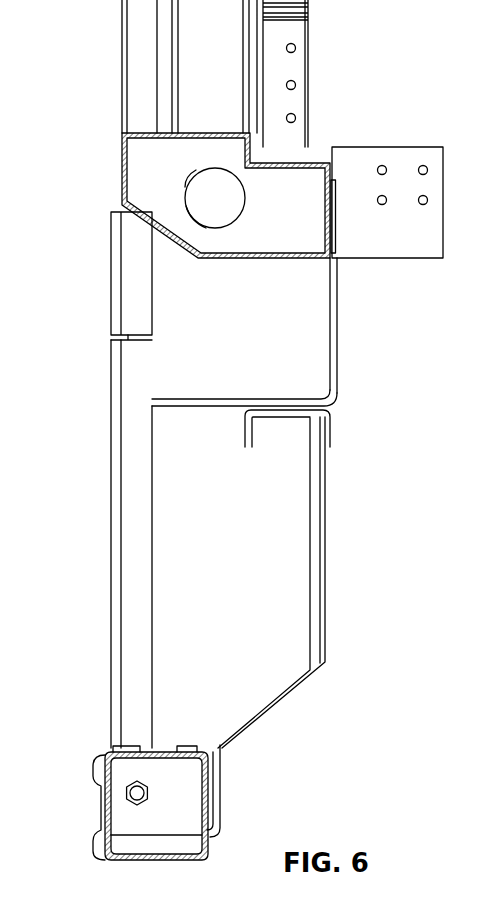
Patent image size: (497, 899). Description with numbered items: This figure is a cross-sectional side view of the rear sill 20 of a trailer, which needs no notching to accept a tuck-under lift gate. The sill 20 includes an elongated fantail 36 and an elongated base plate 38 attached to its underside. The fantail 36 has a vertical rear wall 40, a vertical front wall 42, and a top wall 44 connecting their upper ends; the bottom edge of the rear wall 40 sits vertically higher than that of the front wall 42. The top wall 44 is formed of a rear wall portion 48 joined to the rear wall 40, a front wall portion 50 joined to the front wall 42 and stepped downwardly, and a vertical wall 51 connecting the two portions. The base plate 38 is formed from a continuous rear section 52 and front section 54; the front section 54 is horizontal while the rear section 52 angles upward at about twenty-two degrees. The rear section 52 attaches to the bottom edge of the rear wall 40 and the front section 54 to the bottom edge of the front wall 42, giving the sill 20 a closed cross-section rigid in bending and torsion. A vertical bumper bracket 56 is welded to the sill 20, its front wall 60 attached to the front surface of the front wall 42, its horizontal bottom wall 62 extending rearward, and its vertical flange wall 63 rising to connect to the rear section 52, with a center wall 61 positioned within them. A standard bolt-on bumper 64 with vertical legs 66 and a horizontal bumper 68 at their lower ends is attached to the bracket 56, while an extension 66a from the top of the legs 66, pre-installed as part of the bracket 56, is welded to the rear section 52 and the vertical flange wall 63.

The rear sill 20 is at (116, 131).
The fantail 36 is at (148, 128).
The base plate 38 is at (173, 248).
The rear wall 40 is at (120, 162).
The front wall 42 is at (337, 198).
The top wall 44 is at (254, 128).
The rear wall portion 48 is at (195, 134).
The front wall portion 50 is at (316, 163).
The vertical wall 51 is at (254, 156).
The rear section 52 is at (143, 223).
The front section 54 is at (300, 259).
The bumper bracket 56 is at (287, 339).
The front wall 60 is at (340, 352).
The center wall 61 is at (331, 397).
The bottom wall 62 is at (218, 402).
The vertical flange wall 63 is at (112, 337).
The bolt-on bumper 64 is at (153, 802).
The legs 66 is at (128, 482).
The extension 66a is at (115, 315).
The horizontal bumper 68 is at (217, 802).